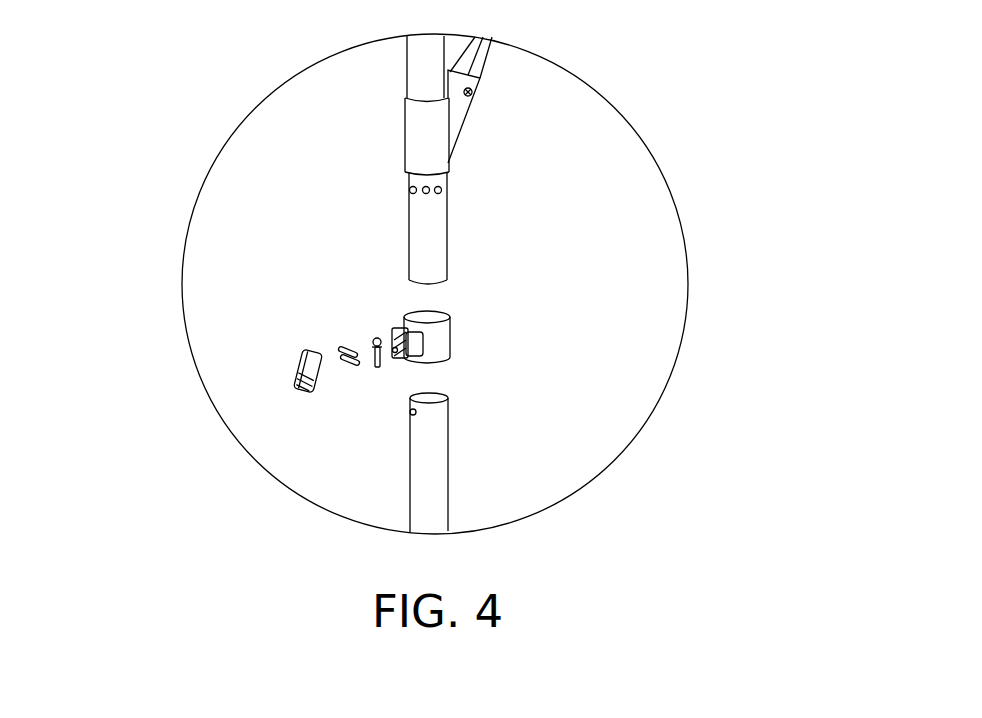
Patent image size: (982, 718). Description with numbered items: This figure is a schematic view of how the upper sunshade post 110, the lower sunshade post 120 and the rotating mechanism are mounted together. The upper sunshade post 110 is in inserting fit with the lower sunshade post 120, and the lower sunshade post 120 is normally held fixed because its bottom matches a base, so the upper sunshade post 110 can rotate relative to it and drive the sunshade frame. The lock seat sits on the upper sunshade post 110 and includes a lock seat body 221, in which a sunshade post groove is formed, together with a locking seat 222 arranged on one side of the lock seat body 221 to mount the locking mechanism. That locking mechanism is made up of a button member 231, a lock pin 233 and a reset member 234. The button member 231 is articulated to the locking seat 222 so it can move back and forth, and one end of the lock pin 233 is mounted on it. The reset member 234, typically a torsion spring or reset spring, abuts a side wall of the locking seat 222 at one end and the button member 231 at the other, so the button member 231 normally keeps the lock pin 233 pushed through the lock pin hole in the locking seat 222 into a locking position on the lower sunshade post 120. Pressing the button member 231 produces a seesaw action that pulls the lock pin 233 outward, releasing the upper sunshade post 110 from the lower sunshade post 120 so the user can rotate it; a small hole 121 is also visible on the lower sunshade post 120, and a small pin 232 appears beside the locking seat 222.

The upper sunshade post 110 is at (423, 67).
The lower sunshade post 120 is at (427, 478).
The positioning hole 121 is at (410, 410).
The lock seat body 221 is at (450, 318).
The locking seat 222 is at (423, 342).
The button member 231 is at (305, 368).
The pin 232 is at (357, 357).
The lock pin 233 is at (378, 338).
The reset member 234 is at (393, 350).